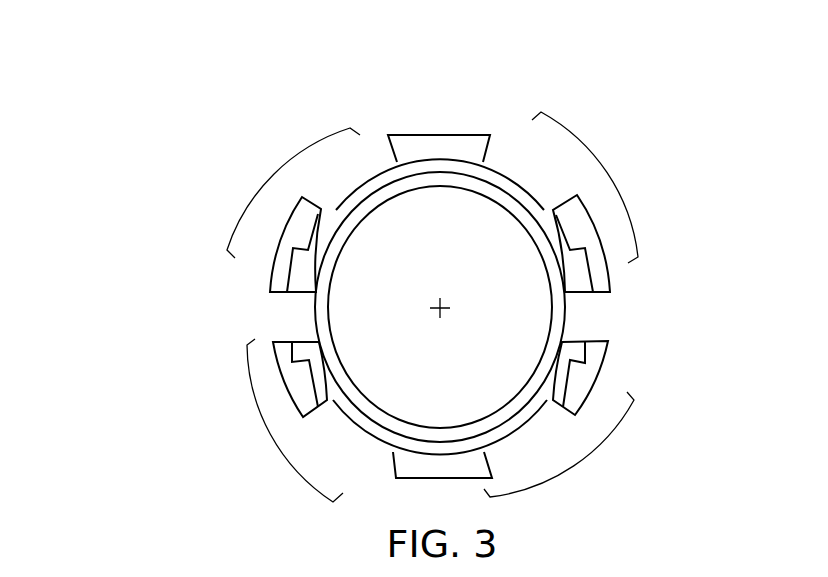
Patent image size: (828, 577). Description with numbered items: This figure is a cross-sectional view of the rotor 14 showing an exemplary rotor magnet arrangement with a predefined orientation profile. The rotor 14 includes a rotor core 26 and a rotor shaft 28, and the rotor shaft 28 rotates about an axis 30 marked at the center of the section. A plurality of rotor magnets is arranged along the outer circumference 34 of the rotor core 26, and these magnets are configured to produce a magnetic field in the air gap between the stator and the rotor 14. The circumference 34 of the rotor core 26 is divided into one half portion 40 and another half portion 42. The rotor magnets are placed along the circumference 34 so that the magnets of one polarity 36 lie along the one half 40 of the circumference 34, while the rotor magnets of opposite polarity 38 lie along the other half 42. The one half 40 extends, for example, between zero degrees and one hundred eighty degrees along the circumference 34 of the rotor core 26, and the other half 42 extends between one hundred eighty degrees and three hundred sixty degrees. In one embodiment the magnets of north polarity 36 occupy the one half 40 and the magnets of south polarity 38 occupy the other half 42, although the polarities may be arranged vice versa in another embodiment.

The rotor 14 is at (152, 66).
The rotor core 26 is at (575, 287).
The rotor shaft 28 is at (553, 322).
The axis 30 is at (446, 303).
The outer circumference 34 is at (503, 440).
The magnets of one polarity 36 is at (553, 210).
The rotor magnets of opposite polarity 38 is at (553, 398).
The one half portion 40 is at (273, 175).
The other half portion 42 is at (272, 432).